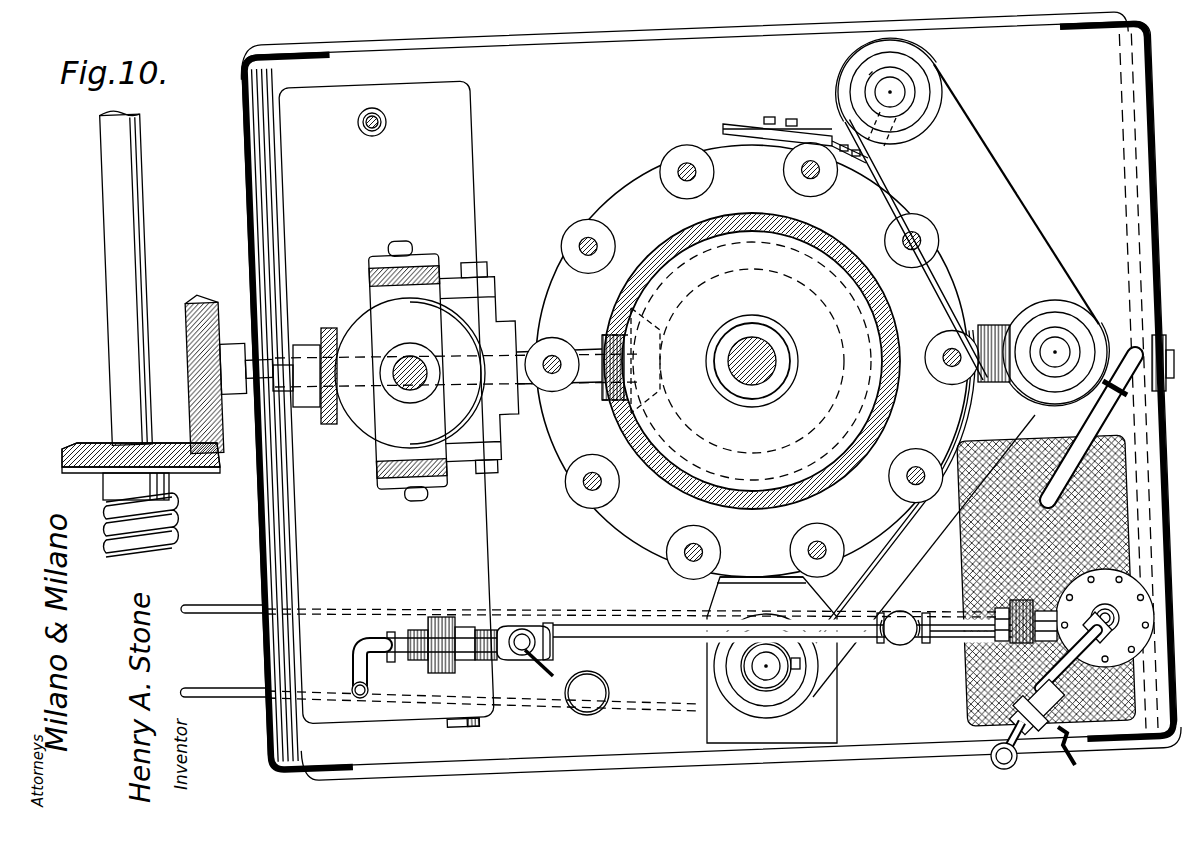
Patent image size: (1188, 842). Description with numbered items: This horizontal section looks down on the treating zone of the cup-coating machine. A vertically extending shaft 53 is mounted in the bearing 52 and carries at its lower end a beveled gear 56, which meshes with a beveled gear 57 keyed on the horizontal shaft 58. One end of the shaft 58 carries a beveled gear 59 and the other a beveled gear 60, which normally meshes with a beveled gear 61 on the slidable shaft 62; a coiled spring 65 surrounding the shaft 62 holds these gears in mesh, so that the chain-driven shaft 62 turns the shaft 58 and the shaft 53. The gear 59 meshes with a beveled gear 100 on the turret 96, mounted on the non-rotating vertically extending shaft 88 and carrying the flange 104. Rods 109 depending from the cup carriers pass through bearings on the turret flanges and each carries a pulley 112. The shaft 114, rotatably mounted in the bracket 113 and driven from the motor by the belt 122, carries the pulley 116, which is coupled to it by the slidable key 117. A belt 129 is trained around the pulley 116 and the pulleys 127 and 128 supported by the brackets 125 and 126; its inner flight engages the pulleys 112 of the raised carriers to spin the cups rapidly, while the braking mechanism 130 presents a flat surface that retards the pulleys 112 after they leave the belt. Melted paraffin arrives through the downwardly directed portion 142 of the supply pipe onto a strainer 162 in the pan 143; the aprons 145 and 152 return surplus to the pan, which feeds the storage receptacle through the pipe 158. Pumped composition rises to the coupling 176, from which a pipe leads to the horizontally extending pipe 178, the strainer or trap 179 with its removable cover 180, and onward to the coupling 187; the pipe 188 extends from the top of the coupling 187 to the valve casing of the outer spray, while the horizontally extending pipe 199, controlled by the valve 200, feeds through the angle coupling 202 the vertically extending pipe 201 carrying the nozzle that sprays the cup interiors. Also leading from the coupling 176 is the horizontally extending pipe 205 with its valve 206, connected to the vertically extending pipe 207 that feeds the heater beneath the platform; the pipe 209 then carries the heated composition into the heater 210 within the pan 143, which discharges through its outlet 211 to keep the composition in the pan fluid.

The bearing 52 is at (385, 276).
The vertically extending shaft 53 is at (400, 403).
The beveled gear 56 is at (366, 336).
The beveled gear 57 is at (328, 336).
The horizontal shaft 58 is at (296, 412).
The beveled gear 59 is at (655, 373).
The beveled gear 60 is at (205, 300).
The beveled gear 61 is at (105, 443).
The slidable shaft 62 is at (128, 357).
The coiled spring 65 is at (170, 528).
The vertically extending shaft 88 is at (778, 365).
The turret 96 is at (668, 238).
The beveled gear 100 is at (738, 468).
The flange 104 is at (637, 520).
The rod 109 is at (911, 240).
The pulley 112 is at (784, 176).
The bracket 113 is at (745, 577).
The shaft 114 is at (782, 686).
The pulley 116 is at (768, 722).
The slidable key 117 is at (801, 663).
The belt 122 is at (233, 673).
The bracket 125 is at (889, 162).
The bracket 126 is at (988, 325).
The pulley 127 is at (916, 95).
The pulley 128 is at (1062, 318).
The belt 129 is at (1022, 214).
The braking mechanism 130 is at (762, 127).
The downwardly directed portion 142 is at (1096, 409).
The pan 143 is at (300, 768).
The apron 145 is at (1140, 132).
The apron 152 is at (247, 173).
The pipe 158 is at (610, 690).
The strainer 162 is at (1000, 534).
The coupling 176 is at (905, 611).
The horizontally extending pipe 178 is at (1058, 598).
The strainer or trap 179 is at (1012, 641).
The removable cover 180 is at (1058, 670).
The coupling 187 is at (1100, 612).
The pipe 188 is at (1111, 633).
The horizontally extending pipe 199 is at (1093, 692).
The valve 200 is at (1035, 753).
The vertically extending pipe 201 is at (992, 761).
The angle coupling 202 is at (1002, 733).
The horizontally extending pipe 205 is at (845, 628).
The valve 206 is at (528, 630).
The vertically extending pipe 207 is at (368, 666).
The pipe 209 is at (381, 110).
The heater 210 is at (470, 548).
The outlet 211 is at (462, 724).